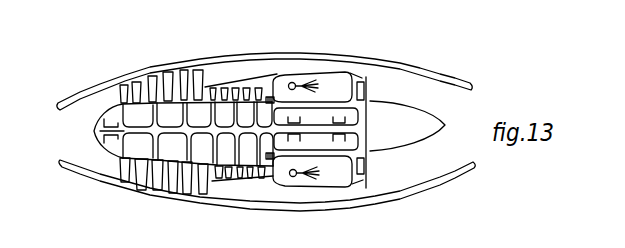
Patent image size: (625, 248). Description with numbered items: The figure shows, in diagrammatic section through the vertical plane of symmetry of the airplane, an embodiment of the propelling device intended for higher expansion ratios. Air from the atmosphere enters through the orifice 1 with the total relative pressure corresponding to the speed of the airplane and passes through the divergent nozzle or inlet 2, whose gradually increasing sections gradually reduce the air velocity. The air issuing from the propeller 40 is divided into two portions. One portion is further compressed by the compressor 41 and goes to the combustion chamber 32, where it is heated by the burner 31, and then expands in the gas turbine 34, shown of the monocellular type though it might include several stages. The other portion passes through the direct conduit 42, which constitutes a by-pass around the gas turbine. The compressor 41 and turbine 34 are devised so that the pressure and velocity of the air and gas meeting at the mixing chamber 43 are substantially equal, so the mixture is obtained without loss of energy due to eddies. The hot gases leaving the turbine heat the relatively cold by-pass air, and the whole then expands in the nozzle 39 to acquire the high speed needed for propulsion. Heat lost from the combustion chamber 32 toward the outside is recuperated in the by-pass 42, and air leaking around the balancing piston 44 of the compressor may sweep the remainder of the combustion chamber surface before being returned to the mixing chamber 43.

The orifice 1 is at (57, 135).
The divergent nozzle or inlet 2 is at (105, 103).
The burner 31 is at (292, 82).
The combustion chamber 32 is at (323, 80).
The gas turbine 34 is at (363, 127).
The nozzle 39 is at (463, 122).
The propeller 40 is at (153, 90).
The compressor 41 is at (232, 82).
The direct conduit 42 is at (309, 196).
The mixing chamber 43 is at (383, 87).
The balancing piston 44 is at (270, 99).